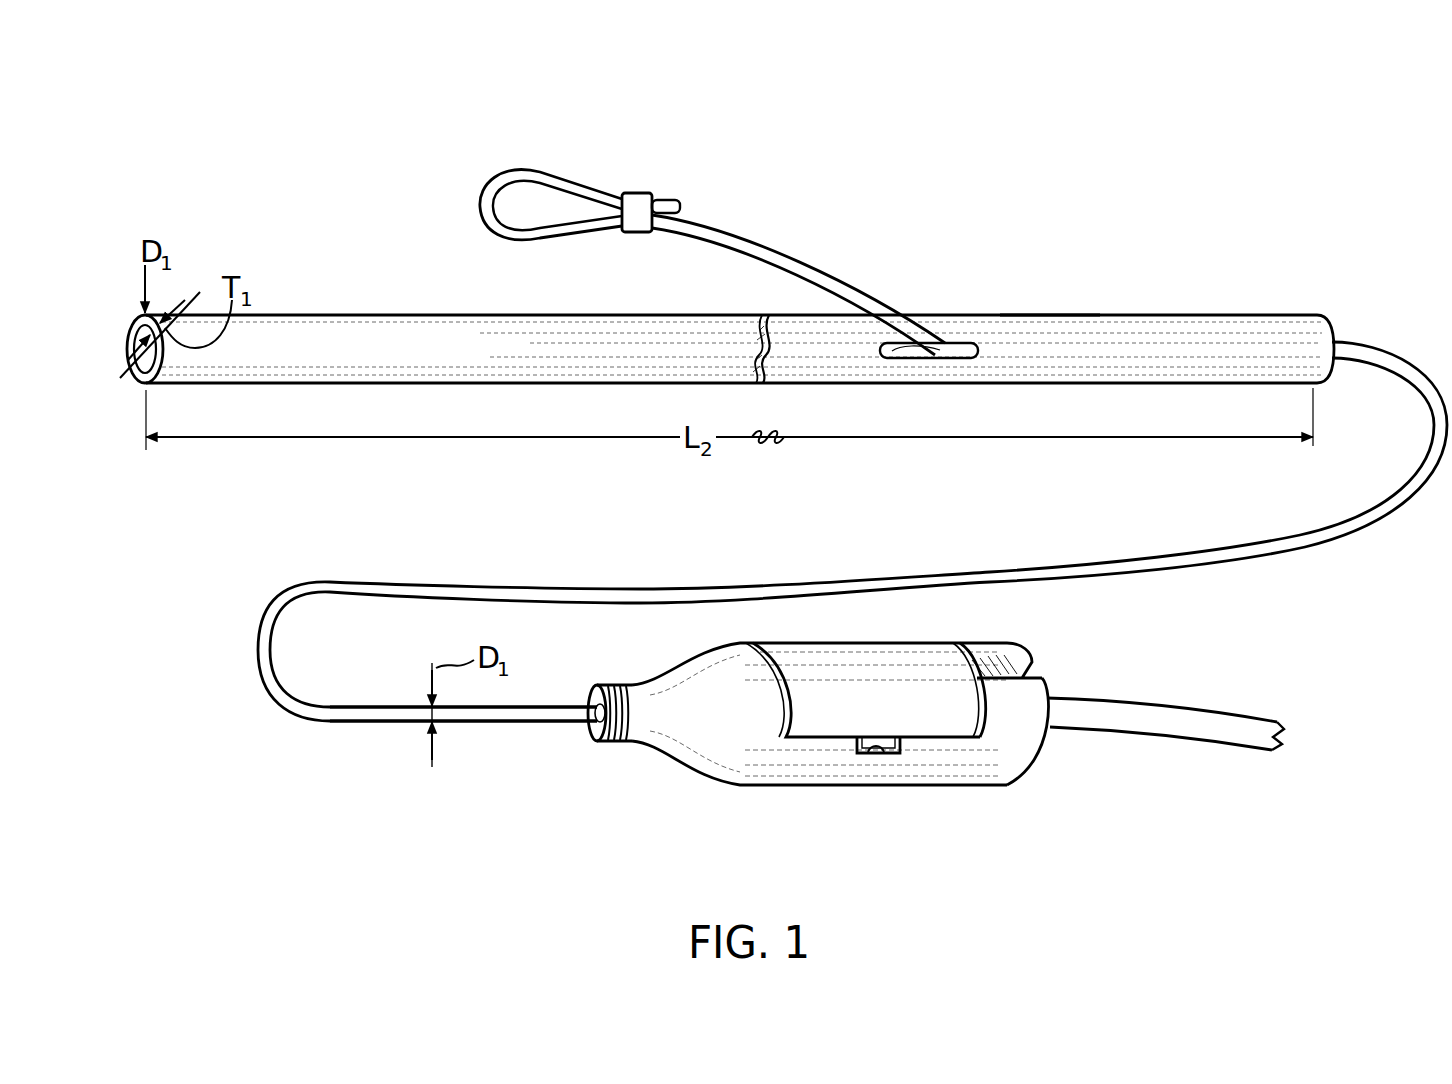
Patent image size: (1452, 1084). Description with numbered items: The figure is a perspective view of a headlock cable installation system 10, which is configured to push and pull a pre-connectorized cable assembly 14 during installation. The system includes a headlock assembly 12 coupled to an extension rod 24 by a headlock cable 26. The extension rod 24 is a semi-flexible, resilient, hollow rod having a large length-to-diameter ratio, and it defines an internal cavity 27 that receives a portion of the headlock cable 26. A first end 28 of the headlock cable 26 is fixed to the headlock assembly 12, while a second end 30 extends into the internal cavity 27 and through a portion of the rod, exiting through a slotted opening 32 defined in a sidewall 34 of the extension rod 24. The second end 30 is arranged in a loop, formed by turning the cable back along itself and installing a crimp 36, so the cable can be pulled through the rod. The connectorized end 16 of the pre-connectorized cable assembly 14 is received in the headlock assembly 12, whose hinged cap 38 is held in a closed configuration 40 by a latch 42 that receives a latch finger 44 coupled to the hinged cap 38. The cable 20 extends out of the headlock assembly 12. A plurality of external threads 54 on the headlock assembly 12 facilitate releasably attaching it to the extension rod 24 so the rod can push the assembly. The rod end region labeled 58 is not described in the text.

The headlock cable installation system 10 is at (806, 147).
The headlock assembly 12 is at (965, 788).
The pre-connectorized cable assembly 14 is at (1248, 752).
The connectorized end 16 is at (1052, 757).
The cable 20 is at (1193, 715).
The extension rod 24 is at (1118, 315).
The headlock cable 26 is at (992, 572).
The internal cavity 27 is at (134, 327).
The first end 28 is at (560, 740).
The second end 30 is at (603, 160).
The slotted opening 32 is at (952, 342).
The sidewall 34 is at (1038, 326).
The crimp 36 is at (652, 193).
The hinged cap 38 is at (878, 670).
The closed configuration 40 is at (788, 822).
The latch 42 is at (886, 753).
The latch finger 44 is at (872, 753).
The external threads 54 is at (615, 742).
The proximal end of tube 58 is at (1307, 287).